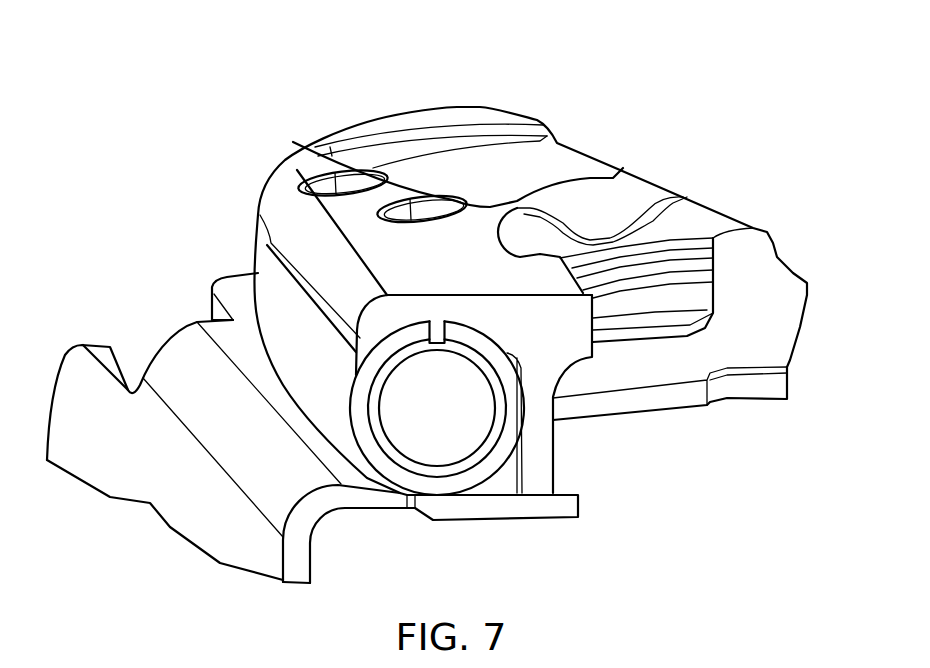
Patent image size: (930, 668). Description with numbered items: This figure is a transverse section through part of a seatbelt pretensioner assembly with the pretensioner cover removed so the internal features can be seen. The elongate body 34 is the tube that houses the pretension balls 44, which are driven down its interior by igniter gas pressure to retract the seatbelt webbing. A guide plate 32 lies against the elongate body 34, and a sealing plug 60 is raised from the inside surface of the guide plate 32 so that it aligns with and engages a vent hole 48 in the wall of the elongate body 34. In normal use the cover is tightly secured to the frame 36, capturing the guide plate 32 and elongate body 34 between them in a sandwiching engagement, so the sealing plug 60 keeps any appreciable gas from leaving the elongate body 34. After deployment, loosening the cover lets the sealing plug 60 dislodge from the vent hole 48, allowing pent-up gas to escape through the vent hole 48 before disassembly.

The guide plate 32 is at (403, 130).
The elongate body 34 is at (303, 338).
The frame 36 is at (317, 512).
The pretension ball 44 is at (450, 405).
The vent hole 48 is at (500, 368).
The sealing plug 60 is at (440, 333).